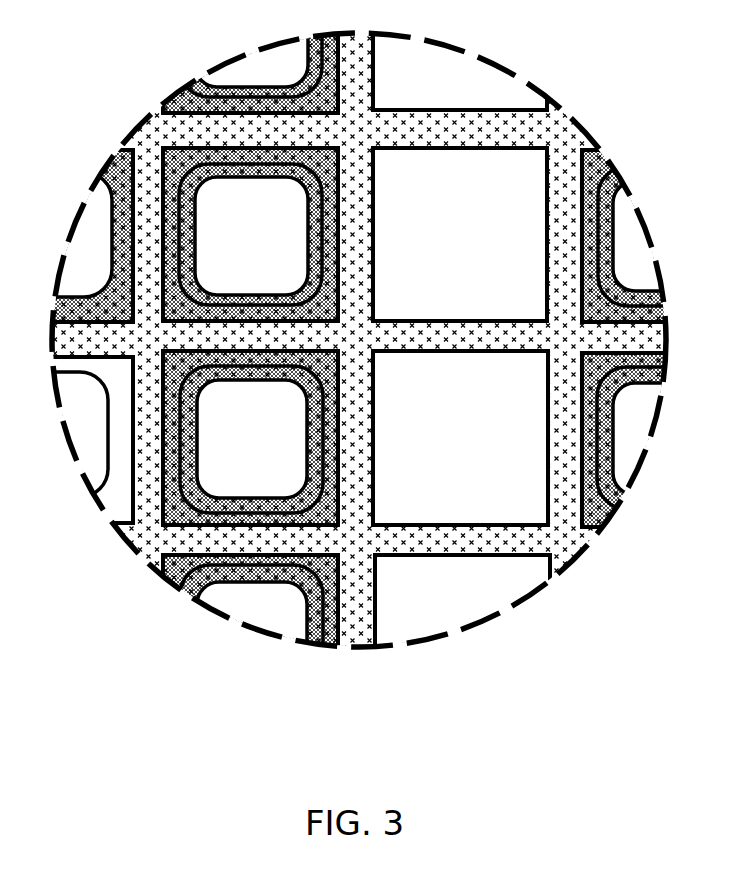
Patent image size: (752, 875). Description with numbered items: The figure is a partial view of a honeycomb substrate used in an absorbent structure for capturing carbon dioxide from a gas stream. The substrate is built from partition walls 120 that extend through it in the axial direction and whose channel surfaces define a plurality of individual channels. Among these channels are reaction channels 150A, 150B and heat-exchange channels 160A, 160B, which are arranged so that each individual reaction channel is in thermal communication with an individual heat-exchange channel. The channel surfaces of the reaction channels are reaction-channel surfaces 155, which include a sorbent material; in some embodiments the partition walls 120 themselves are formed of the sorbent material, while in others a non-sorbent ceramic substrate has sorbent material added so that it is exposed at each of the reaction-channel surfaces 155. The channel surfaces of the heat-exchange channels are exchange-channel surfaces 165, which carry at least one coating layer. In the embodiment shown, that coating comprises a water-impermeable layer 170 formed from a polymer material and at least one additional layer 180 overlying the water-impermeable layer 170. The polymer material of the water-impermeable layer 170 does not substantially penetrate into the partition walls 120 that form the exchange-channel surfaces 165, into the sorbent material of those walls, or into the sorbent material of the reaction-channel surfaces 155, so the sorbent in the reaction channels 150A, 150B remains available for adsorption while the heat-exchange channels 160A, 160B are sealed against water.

The partition walls 120 is at (363, 633).
The reaction channel 150A is at (500, 298).
The reaction channel 150B is at (500, 477).
The reaction-channel surfaces 155 is at (380, 223).
The heat-exchange channel 160A is at (195, 199).
The heat-exchange channel 160B is at (250, 438).
The exchange-channel surfaces 165 is at (222, 392).
The water-impermeable layer 170 is at (177, 165).
The additional layer 180 is at (300, 205).